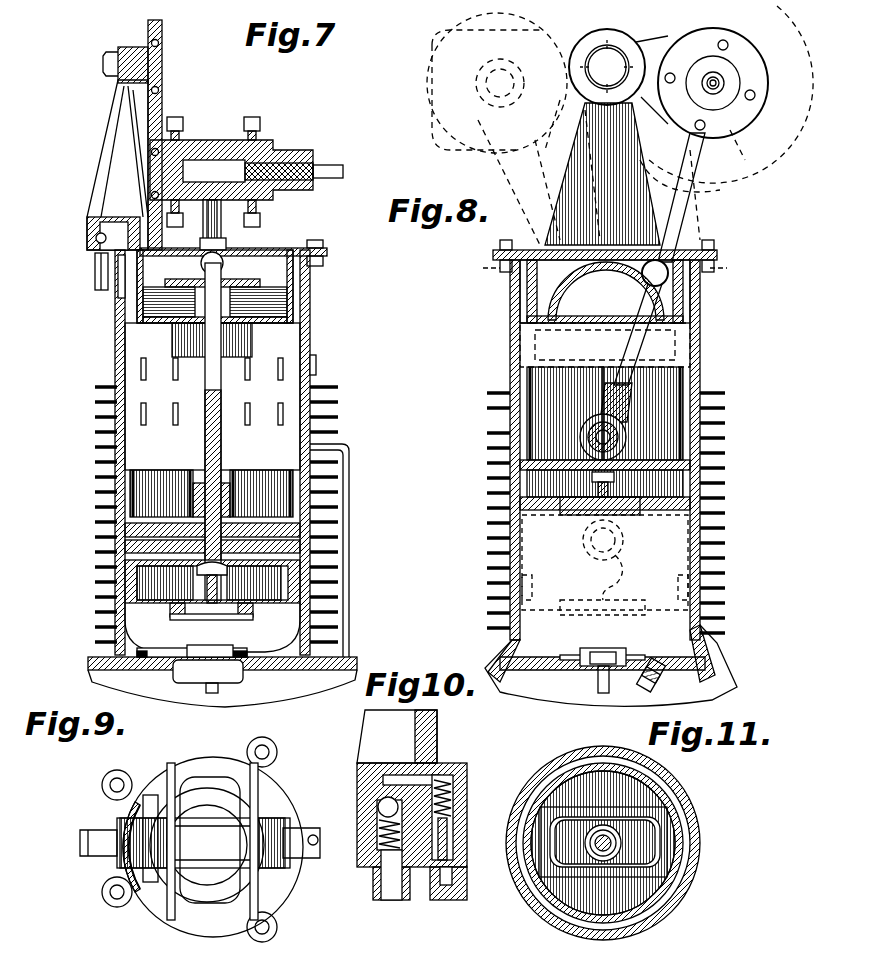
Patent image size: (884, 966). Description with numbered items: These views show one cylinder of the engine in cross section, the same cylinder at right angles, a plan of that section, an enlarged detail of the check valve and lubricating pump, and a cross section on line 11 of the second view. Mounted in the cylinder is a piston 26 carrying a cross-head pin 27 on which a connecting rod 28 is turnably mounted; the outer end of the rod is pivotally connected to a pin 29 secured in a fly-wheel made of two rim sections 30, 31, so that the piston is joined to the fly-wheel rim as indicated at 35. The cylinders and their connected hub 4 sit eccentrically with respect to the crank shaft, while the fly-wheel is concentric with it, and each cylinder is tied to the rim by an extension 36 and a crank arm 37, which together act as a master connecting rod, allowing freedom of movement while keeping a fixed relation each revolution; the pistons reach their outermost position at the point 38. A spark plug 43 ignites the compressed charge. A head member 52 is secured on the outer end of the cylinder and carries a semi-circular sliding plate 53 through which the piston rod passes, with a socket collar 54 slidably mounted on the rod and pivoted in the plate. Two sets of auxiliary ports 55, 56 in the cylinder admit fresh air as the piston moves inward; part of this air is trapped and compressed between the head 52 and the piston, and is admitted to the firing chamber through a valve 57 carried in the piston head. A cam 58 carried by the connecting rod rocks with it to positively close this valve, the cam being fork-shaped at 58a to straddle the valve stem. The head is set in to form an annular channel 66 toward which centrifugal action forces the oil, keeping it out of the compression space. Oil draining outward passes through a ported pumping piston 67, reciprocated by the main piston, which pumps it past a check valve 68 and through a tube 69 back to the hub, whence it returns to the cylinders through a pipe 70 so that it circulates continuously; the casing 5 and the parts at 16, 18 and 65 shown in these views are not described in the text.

In FIG. 7, the hub 4 is at (88, 665).
In FIG. 8, the hub 4 is at (712, 686).
In FIG. 9, the crank case 5 is at (202, 839).
In FIG. 11, the crank case 5 is at (700, 843).
In FIG. 8, the section line 11 is at (607, 273).
In FIG. 7, the valve 16 is at (212, 652).
In FIG. 8, the valve 16 is at (615, 647).
In FIG. 7, the valve disk 18 is at (172, 650).
In FIG. 8, the valve disk 18 is at (575, 656).
In FIG. 7, the piston 26 is at (161, 493).
In FIG. 8, the piston 26 is at (565, 413).
In FIG. 7, the cross-head pin 27 is at (261, 493).
In FIG. 8, the cross-head pin 27 is at (643, 413).
In FIG. 7, the connecting rod 28 is at (205, 449).
In FIG. 8, the connecting rod 28 is at (605, 345).
In FIG. 11, the connecting rod 28 is at (603, 870).
In FIG. 7, the pin 29 is at (200, 152).
In FIG. 9, the pin 29 is at (200, 838).
In FIG. 7, the rim section 30 is at (175, 117).
In FIG. 9, the rim section 30 is at (170, 764).
In FIG. 7, the rim section 31 is at (255, 119).
In FIG. 9, the rim section 31 is at (258, 784).
In FIG. 8, the piston connection to fly-wheel rim 35 is at (585, 64).
In FIG. 7, the extension 36 is at (118, 160).
In FIG. 9, the extension 36 is at (118, 866).
In FIG. 10, the extension 36 is at (397, 736).
In FIG. 7, the crank arm 37 is at (148, 116).
In FIG. 8, the crank arm 37 is at (702, 82).
In FIG. 9, the crank arm 37 is at (160, 900).
In FIG. 8, the outermost piston position point 38 is at (625, 281).
In FIG. 8, the spark plug 43 is at (650, 662).
In FIG. 7, the head member 52 is at (312, 249).
In FIG. 8, the head member 52 is at (522, 292).
In FIG. 11, the head member 52 is at (603, 843).
In FIG. 7, the semi-circular sliding plate 53 is at (200, 264).
In FIG. 8, the semi-circular sliding plate 53 is at (690, 330).
In FIG. 11, the semi-circular sliding plate 53 is at (562, 842).
In FIG. 7, the socket collar 54 is at (226, 250).
In FIG. 11, the socket collar 54 is at (621, 843).
In FIG. 7, the auxiliary ports 55 is at (310, 364).
In FIG. 7, the auxiliary ports 56 is at (318, 412).
In FIG. 8, the auxiliary ports 56 is at (510, 411).
In FIG. 7, the valve 57 is at (228, 618).
In FIG. 8, the valve 57 is at (624, 518).
In FIG. 8, the cam 58 is at (606, 291).
In FIG. 7, the fork-shaped cam portion 58a is at (222, 575).
In FIG. 8, the fork-shaped cam portion 58a is at (592, 480).
In FIG. 10, the passage 65 is at (444, 886).
In FIG. 7, the annular channel 66 is at (305, 302).
In FIG. 8, the annular channel 66 is at (696, 300).
In FIG. 7, the ported pumping piston 67 is at (118, 285).
In FIG. 10, the ported pumping piston 67 is at (455, 826).
In FIG. 7, the check valve 68 is at (95, 239).
In FIG. 9, the check valve 68 is at (348, 820).
In FIG. 10, the check valve 68 is at (378, 807).
In FIG. 7, the tube 69 is at (95, 280).
In FIG. 10, the tube 69 is at (387, 890).
In FIG. 7, the pipe 70 is at (349, 552).